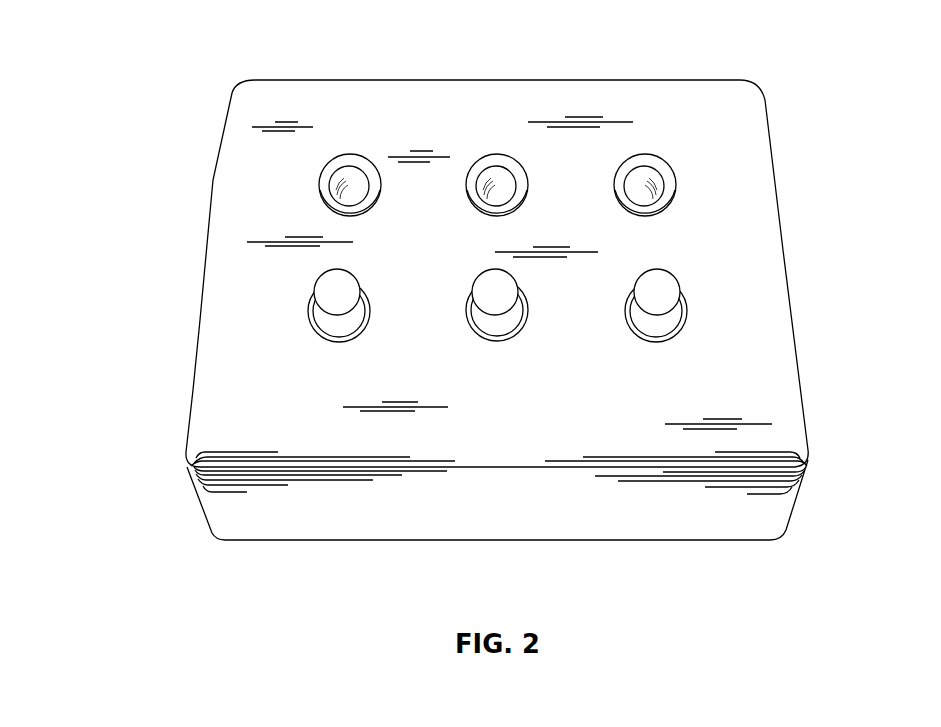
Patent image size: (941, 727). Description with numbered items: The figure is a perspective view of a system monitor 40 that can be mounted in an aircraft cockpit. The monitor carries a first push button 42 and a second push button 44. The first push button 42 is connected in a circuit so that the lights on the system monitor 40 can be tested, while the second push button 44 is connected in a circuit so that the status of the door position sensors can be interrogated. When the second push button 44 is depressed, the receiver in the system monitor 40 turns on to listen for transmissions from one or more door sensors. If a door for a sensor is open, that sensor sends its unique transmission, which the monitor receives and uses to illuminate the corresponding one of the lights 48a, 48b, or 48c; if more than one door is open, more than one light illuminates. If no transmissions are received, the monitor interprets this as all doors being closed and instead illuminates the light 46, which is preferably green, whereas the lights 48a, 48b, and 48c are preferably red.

The system monitor 40 is at (805, 148).
The first push button 42 is at (323, 297).
The second push button 44 is at (665, 292).
The light 46 is at (505, 324).
The light 48a is at (648, 174).
The light 48b is at (492, 174).
The light 48c is at (350, 176).